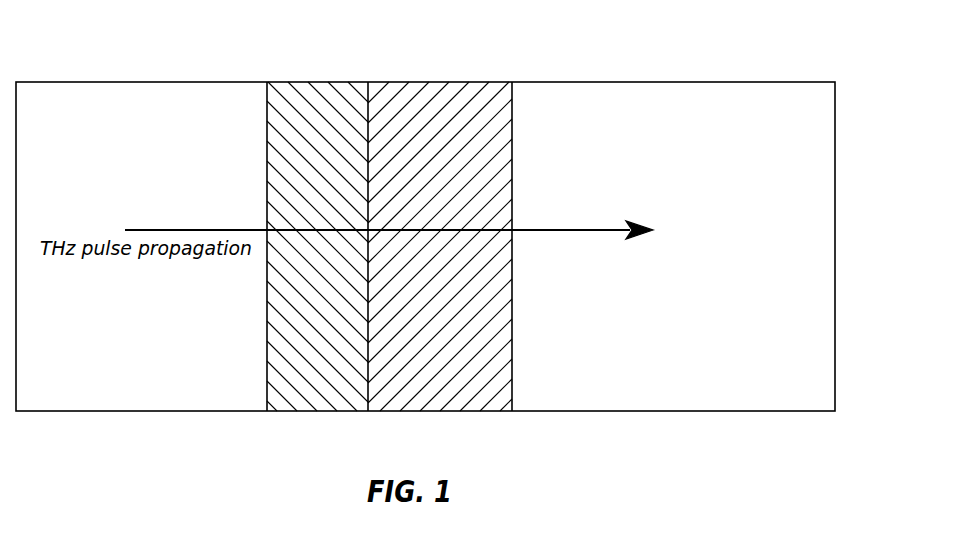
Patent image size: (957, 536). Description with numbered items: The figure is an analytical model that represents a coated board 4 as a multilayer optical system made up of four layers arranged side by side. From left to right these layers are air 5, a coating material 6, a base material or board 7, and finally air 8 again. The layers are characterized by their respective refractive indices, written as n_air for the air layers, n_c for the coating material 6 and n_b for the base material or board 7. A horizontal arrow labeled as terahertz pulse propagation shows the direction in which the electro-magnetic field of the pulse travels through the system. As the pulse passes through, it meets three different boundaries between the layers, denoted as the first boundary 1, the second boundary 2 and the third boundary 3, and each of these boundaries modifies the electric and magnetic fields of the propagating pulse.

The coated board 4 is at (90, 47).
The air 5 is at (147, 82).
The coating material 6 is at (322, 82).
The base material or board 7 is at (437, 82).
The air 8 is at (650, 82).
The boundary 1 is at (268, 260).
The boundary 2 is at (368, 260).
The boundary 3 is at (512, 260).